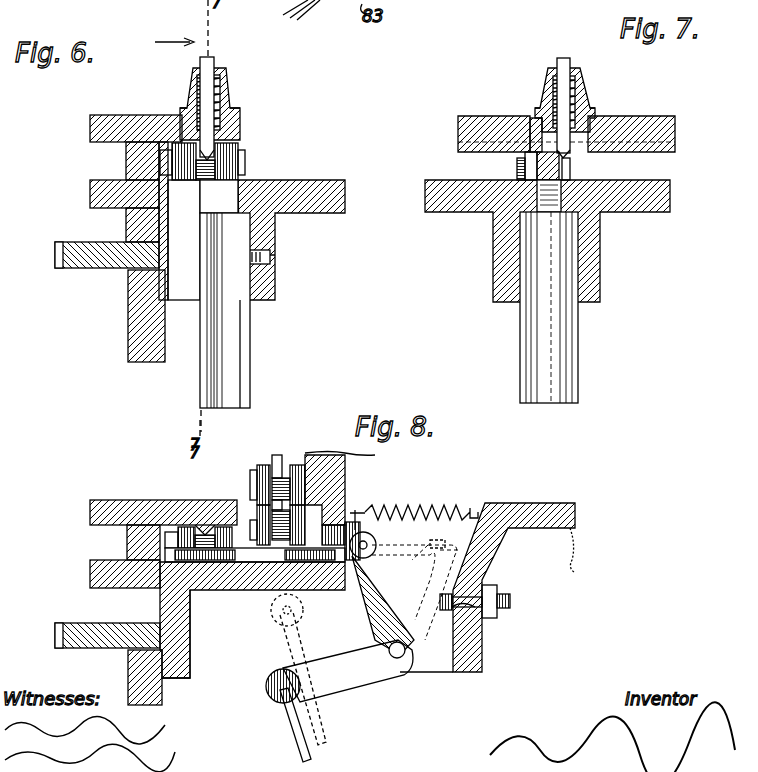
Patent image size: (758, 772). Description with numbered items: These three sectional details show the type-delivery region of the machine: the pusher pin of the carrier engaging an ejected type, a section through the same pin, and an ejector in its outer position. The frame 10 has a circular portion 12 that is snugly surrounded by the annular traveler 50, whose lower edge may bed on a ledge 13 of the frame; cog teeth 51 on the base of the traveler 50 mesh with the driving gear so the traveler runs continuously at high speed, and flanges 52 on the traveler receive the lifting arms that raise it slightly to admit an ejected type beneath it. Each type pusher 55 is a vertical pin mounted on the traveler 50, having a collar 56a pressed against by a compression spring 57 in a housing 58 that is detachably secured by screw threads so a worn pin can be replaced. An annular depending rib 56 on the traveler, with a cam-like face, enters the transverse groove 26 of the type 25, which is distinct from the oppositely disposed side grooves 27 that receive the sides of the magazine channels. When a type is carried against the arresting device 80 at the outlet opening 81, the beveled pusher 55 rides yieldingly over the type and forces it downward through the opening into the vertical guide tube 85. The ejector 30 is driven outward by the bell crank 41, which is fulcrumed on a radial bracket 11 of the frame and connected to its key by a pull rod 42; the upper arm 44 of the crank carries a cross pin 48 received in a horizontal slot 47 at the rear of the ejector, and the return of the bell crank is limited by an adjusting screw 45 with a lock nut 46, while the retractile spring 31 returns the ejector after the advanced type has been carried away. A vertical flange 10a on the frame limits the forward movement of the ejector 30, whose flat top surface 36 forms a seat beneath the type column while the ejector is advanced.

In FIG. 6, the frame 10 is at (330, 214).
In FIG. 7, the frame 10 is at (660, 213).
In FIG. 8, the frame 10 is at (222, 590).
In FIG. 8, the vertical flange 10a is at (140, 552).
In FIG. 8, the radial bracket 11 is at (440, 675).
In FIG. 6, the circular portion 12 is at (128, 218).
In FIG. 8, the circular portion 12 is at (190, 660).
In FIG. 6, the ledge 13 is at (128, 292).
In FIG. 8, the ledge 13 is at (130, 664).
In FIG. 8, the type 25 is at (195, 522).
In FIG. 7, the transverse groove 26 is at (586, 126).
In FIG. 7, the side groove 27 is at (525, 164).
In FIG. 8, the ejector 30 is at (258, 562).
In FIG. 8, the retractile spring 31 is at (422, 505).
In FIG. 8, the flat top surface 36 is at (272, 552).
In FIG. 8, the bell crank 41 is at (368, 688).
In FIG. 8, the pull rod 42 is at (290, 722).
In FIG. 8, the upper arm 44 is at (383, 607).
In FIG. 8, the adjusting screw 45 is at (485, 618).
In FIG. 8, the lock nut 46 is at (490, 592).
In FIG. 8, the horizontal slot 47 is at (370, 535).
In FIG. 8, the cross pin 48 is at (368, 512).
In FIG. 6, the traveler 50 is at (152, 103).
In FIG. 8, the traveler 50 is at (160, 494).
In FIG. 6, the cog teeth 51 is at (54, 255).
In FIG. 8, the cog teeth 51 is at (55, 632).
In FIG. 8, the flange 52 is at (90, 508).
In FIG. 6, the type pusher 55 is at (215, 62).
In FIG. 7, the type pusher 55 is at (565, 58).
In FIG. 7, the depending rib 56 is at (582, 90).
In FIG. 8, the depending rib 56 is at (232, 522).
In FIG. 6, the collar 56a is at (228, 130).
In FIG. 7, the collar 56a is at (590, 115).
In FIG. 6, the compression spring 57 is at (226, 80).
In FIG. 7, the compression spring 57 is at (548, 75).
In FIG. 6, the housing 58 is at (197, 78).
In FIG. 6, the arresting device 80 is at (246, 162).
In FIG. 7, the arresting device 80 is at (517, 172).
In FIG. 6, the outlet opening 81 is at (228, 190).
In FIG. 7, the outlet opening 81 is at (560, 190).
In FIG. 6, the guide tube 85 is at (250, 372).
In FIG. 7, the guide tube 85 is at (578, 365).